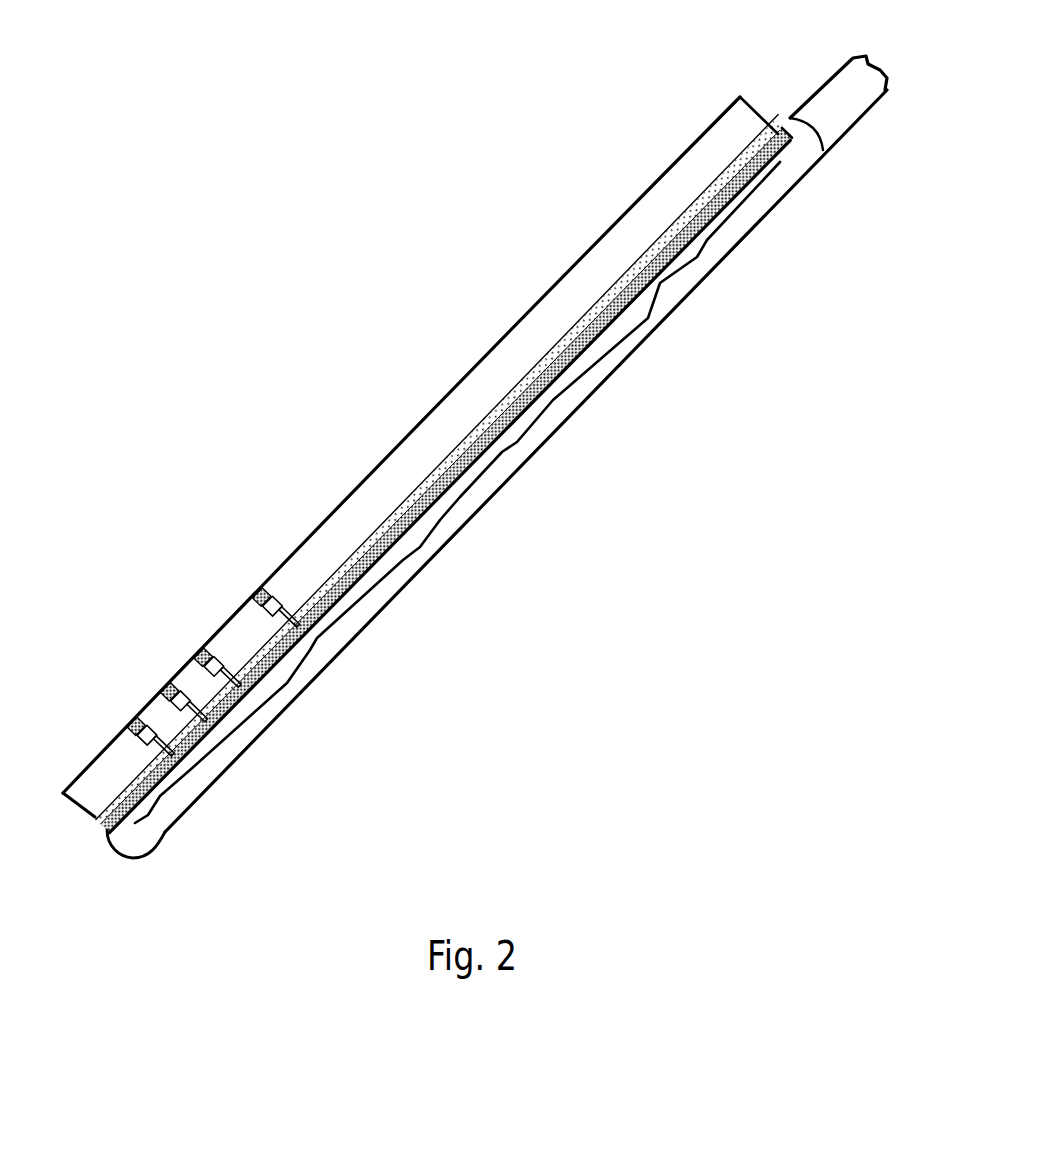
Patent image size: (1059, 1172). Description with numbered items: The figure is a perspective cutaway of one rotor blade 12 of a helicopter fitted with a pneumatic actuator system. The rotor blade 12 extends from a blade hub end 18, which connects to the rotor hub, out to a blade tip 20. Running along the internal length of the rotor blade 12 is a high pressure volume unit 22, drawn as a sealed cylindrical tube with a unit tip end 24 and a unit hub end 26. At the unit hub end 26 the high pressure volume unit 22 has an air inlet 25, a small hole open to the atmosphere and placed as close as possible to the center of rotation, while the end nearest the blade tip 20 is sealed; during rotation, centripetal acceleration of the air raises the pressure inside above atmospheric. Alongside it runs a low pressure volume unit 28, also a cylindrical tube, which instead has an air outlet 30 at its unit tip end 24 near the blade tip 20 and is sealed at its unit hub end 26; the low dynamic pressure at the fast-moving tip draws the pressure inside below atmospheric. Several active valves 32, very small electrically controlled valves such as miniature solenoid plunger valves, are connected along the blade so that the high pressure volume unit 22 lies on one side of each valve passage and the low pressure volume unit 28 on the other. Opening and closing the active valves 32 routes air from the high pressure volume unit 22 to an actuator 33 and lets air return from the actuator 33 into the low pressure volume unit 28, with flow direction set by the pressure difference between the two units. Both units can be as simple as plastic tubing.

The rotor blade 12 is at (259, 737).
The blade hub end 18 is at (747, 88).
The blade tip 20 is at (63, 793).
The high pressure volume unit 22 is at (390, 547).
The unit tip end 24 is at (107, 797).
The air inlet 25 is at (788, 141).
The unit hub end 26 is at (720, 182).
The low pressure volume unit 28 is at (417, 488).
The air outlet 30 is at (93, 820).
The active valve 32 is at (154, 725).
The actuator 33 is at (204, 650).